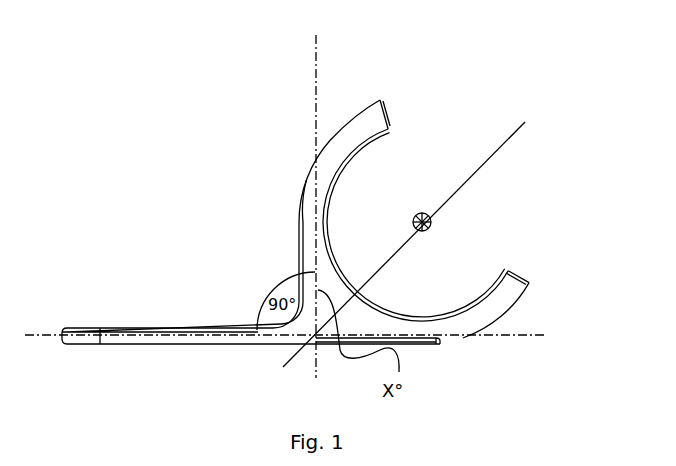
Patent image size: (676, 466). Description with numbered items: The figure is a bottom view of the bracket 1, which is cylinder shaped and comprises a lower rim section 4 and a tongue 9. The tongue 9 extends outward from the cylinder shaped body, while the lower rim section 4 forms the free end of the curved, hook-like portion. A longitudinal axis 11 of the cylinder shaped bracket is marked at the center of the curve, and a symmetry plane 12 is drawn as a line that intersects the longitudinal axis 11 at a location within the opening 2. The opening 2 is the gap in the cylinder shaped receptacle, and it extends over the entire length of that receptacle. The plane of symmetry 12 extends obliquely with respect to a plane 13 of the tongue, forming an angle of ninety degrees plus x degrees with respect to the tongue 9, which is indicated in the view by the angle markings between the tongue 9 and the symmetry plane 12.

The bracket 1 is at (198, 170).
The opening 2 is at (400, 153).
The lower rim section 4 is at (510, 292).
The tongue 9 is at (112, 345).
The longitudinal axis 11 is at (432, 229).
The symmetry plane 12 is at (483, 163).
The plane of the tongue 13 is at (443, 340).